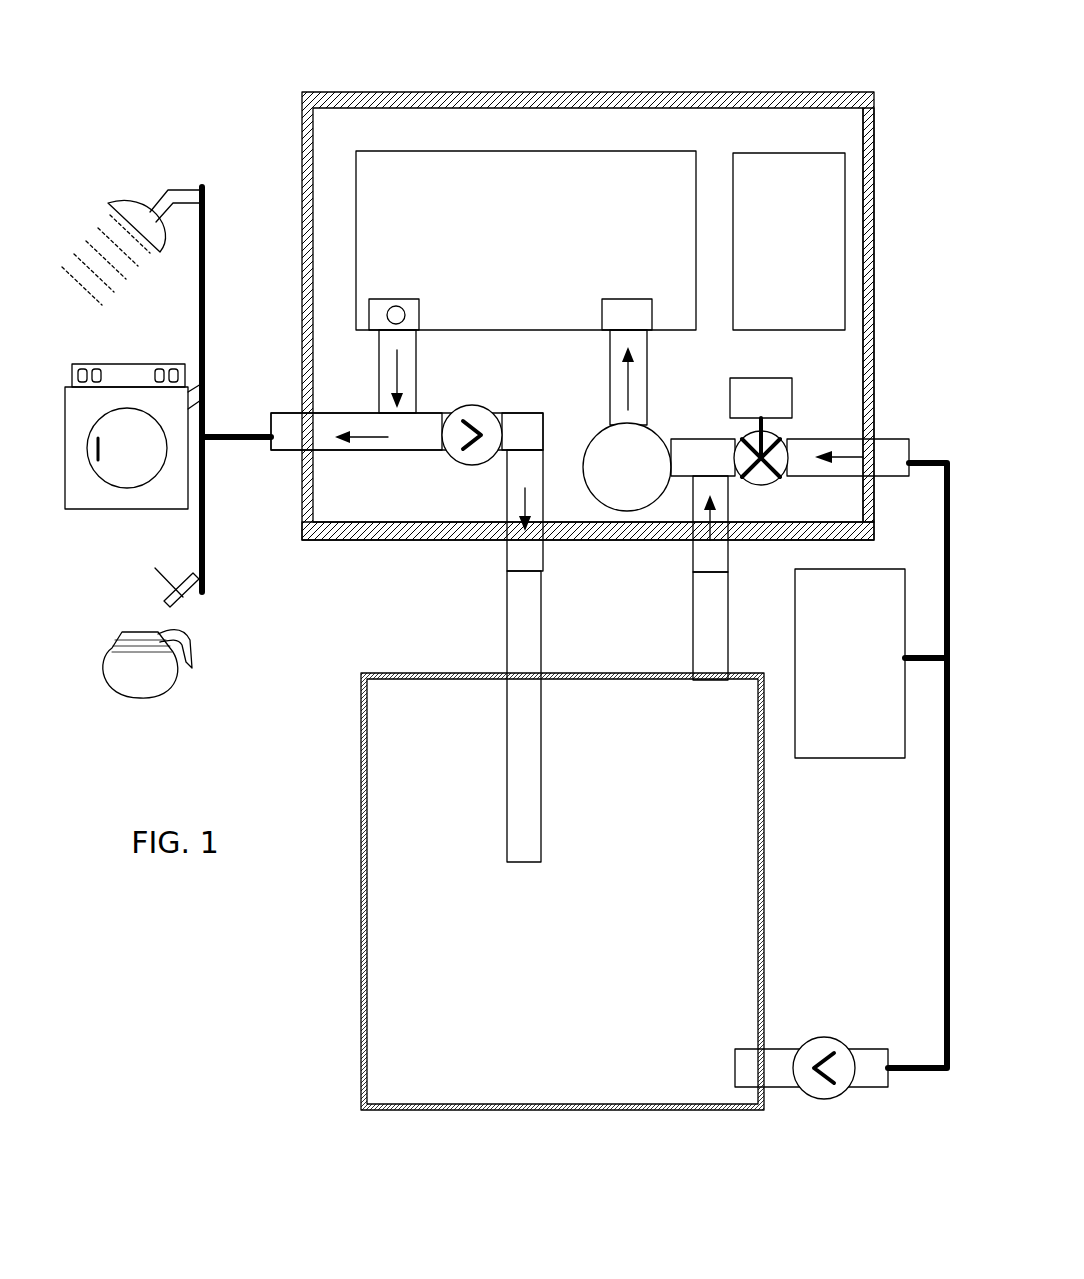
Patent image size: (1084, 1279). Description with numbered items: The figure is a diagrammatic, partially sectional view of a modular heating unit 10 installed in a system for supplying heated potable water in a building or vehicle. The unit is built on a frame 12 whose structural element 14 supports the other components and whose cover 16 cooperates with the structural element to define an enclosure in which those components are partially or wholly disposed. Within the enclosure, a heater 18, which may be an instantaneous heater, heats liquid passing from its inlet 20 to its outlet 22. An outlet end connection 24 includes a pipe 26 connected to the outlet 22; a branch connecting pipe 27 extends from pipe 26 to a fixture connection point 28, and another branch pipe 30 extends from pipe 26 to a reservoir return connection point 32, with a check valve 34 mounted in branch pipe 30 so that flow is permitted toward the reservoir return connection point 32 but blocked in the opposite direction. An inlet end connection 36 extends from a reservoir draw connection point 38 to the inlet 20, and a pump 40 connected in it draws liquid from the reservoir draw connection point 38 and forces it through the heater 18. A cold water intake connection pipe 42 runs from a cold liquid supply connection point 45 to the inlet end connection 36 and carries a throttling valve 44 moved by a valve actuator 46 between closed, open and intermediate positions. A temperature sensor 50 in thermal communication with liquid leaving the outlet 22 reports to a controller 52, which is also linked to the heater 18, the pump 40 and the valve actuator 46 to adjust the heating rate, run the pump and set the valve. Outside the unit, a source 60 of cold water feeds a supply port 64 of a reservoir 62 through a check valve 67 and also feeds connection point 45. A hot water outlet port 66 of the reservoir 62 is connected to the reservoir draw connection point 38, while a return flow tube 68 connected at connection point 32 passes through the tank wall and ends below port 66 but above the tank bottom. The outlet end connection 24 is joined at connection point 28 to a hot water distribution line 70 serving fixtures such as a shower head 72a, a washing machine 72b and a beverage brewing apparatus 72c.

The modular heating unit 10 is at (518, 76).
The frame 12 is at (882, 128).
The structural element 14 is at (400, 541).
The cover 16 is at (876, 190).
The heater 18 is at (594, 208).
The inlet 20 is at (626, 316).
The outlet 22 is at (376, 318).
The outlet end connection 24 is at (330, 406).
The pipe 26 is at (413, 363).
The branch connecting pipe 27 is at (385, 438).
The fixture connection point 28 is at (283, 451).
The branch pipe 30 is at (530, 435).
The reservoir return connection point 32 is at (541, 546).
The check valve 34 is at (463, 458).
The inlet end connection 36 is at (687, 413).
The reservoir draw connection point 38 is at (720, 552).
The pump 40 is at (623, 498).
The cold water intake connection pipe 42 is at (838, 412).
The throttling valve 44 is at (776, 445).
The cold liquid supply connection point 45 is at (883, 437).
The valve actuator 46 is at (782, 397).
The temperature sensor 50 is at (401, 307).
The controller 52 is at (785, 193).
The source 60 is at (832, 750).
The reservoir 62 is at (345, 798).
The supply port 64 is at (765, 1047).
The hot water outlet port 66 is at (702, 670).
The check valve 67 is at (818, 1103).
The return flow tube 68 is at (517, 635).
The hot water distribution line 70 is at (222, 420).
The shower head 72a is at (138, 208).
The washing machine 72b is at (172, 368).
The beverage brewing apparatus 72c is at (108, 680).